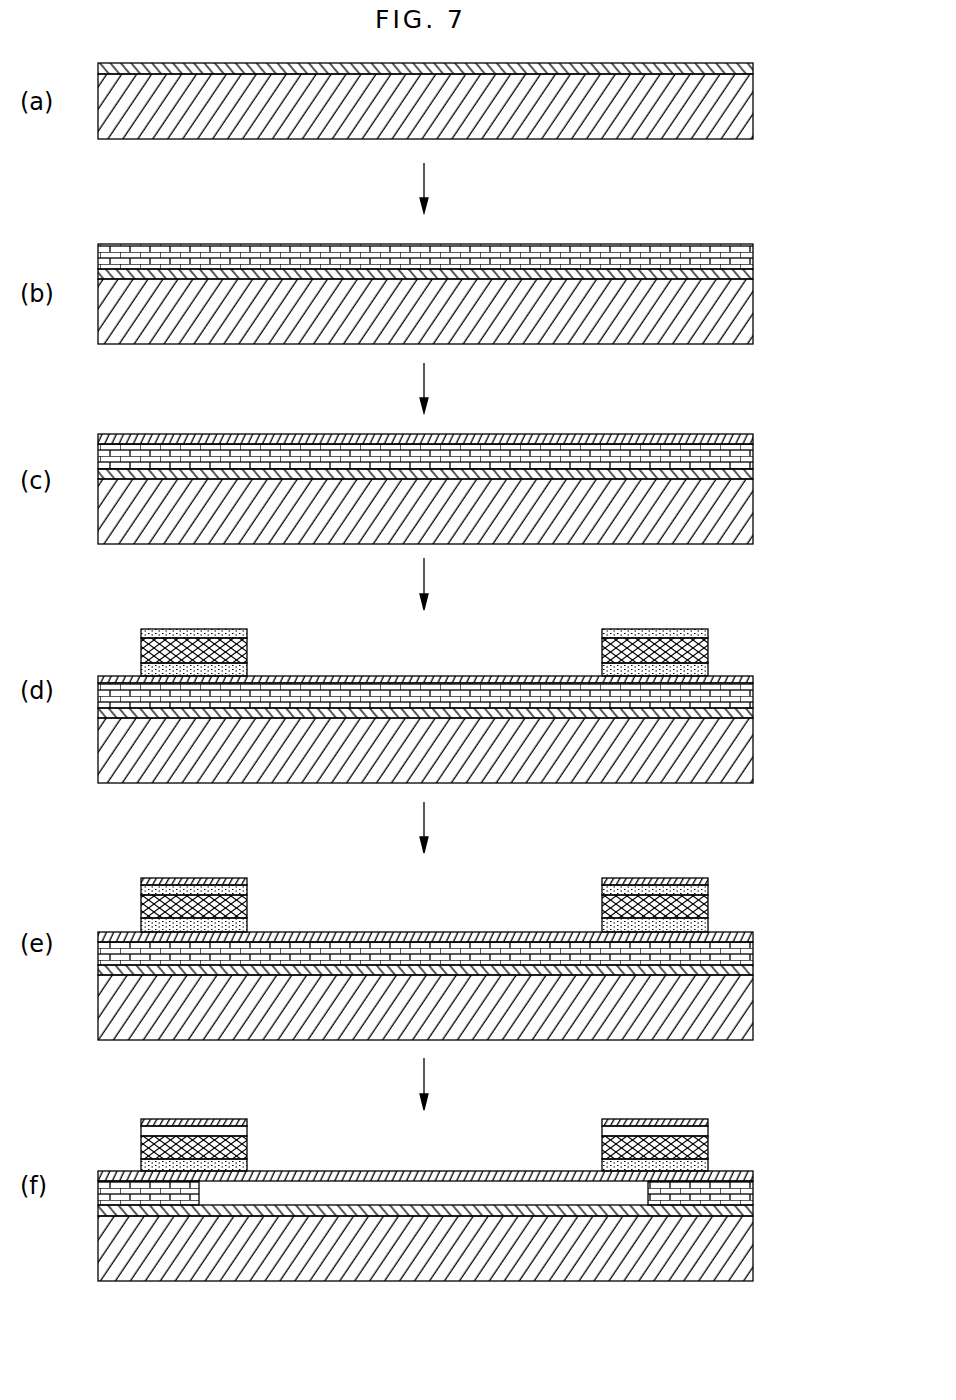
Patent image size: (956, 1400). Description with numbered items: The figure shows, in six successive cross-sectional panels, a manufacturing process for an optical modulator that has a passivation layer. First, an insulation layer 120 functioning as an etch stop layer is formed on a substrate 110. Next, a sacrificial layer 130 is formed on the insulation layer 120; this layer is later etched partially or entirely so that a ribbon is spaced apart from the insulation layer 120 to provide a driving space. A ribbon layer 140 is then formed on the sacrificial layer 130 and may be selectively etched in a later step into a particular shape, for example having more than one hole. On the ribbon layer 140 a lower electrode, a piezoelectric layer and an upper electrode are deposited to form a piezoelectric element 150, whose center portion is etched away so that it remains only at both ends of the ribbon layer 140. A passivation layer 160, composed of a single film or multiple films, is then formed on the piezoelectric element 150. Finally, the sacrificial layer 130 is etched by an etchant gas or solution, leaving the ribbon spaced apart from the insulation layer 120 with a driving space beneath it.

The substrate 110 is at (737, 106).
The insulation layer 120 is at (740, 70).
The sacrificial layer 130 is at (753, 250).
The ribbon layer 140 is at (753, 440).
The piezoelectric element 150 is at (720, 677).
The passivation layer 160 is at (708, 880).